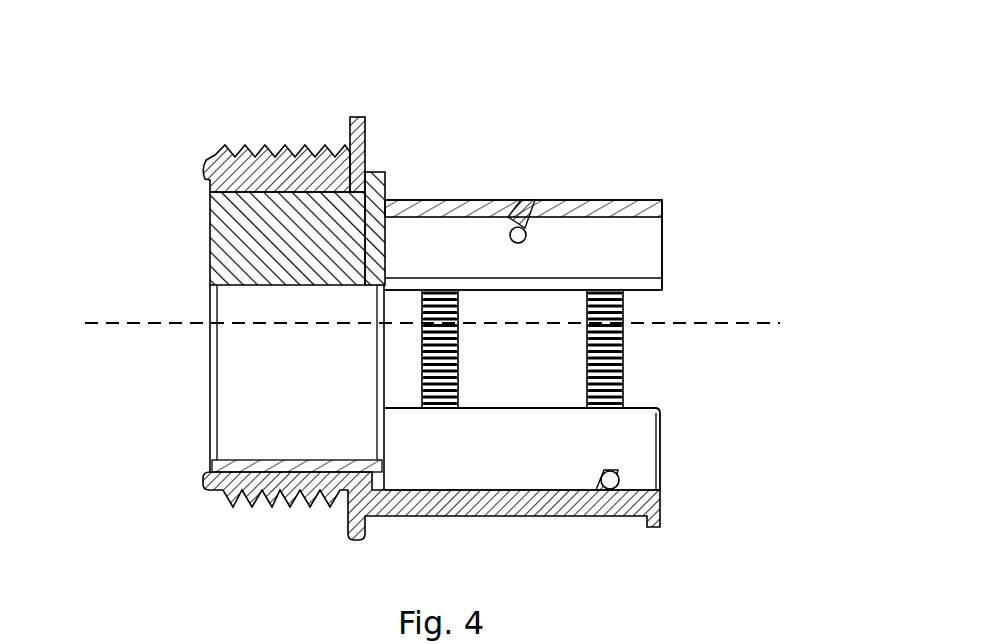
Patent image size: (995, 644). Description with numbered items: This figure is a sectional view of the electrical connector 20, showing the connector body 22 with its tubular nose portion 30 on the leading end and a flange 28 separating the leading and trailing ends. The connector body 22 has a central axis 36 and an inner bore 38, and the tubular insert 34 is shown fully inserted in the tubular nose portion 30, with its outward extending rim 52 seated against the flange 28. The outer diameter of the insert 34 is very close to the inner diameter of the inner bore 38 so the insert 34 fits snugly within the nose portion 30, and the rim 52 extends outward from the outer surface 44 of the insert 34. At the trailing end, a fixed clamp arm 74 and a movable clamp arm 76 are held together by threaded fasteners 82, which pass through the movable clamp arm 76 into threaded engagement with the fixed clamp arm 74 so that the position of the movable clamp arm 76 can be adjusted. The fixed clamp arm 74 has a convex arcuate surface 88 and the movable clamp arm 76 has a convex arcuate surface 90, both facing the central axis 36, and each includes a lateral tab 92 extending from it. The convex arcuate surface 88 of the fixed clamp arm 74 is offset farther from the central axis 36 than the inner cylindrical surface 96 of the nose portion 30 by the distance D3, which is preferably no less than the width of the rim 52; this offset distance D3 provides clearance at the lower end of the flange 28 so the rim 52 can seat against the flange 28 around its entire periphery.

The electrical connector 20 is at (136, 178).
The connector body 22 is at (587, 202).
The flange 28 is at (362, 117).
The tubular nose portion 30 is at (258, 157).
The tubular insert 34 is at (223, 238).
The central axis 36 is at (138, 323).
The inner bore 38 is at (208, 473).
The outer surface 44 is at (303, 480).
The rim 52 is at (375, 172).
The fixed clamp arm 74 is at (660, 453).
The movable clamp arm 76 is at (662, 248).
The threaded fasteners 82 is at (624, 350).
The convex arcuate surface 88 is at (497, 490).
The convex arcuate surface 90 is at (485, 217).
The lateral tab 92 is at (527, 238).
The inner cylindrical surface 96 is at (330, 467).
The offset distance D3 is at (458, 433).